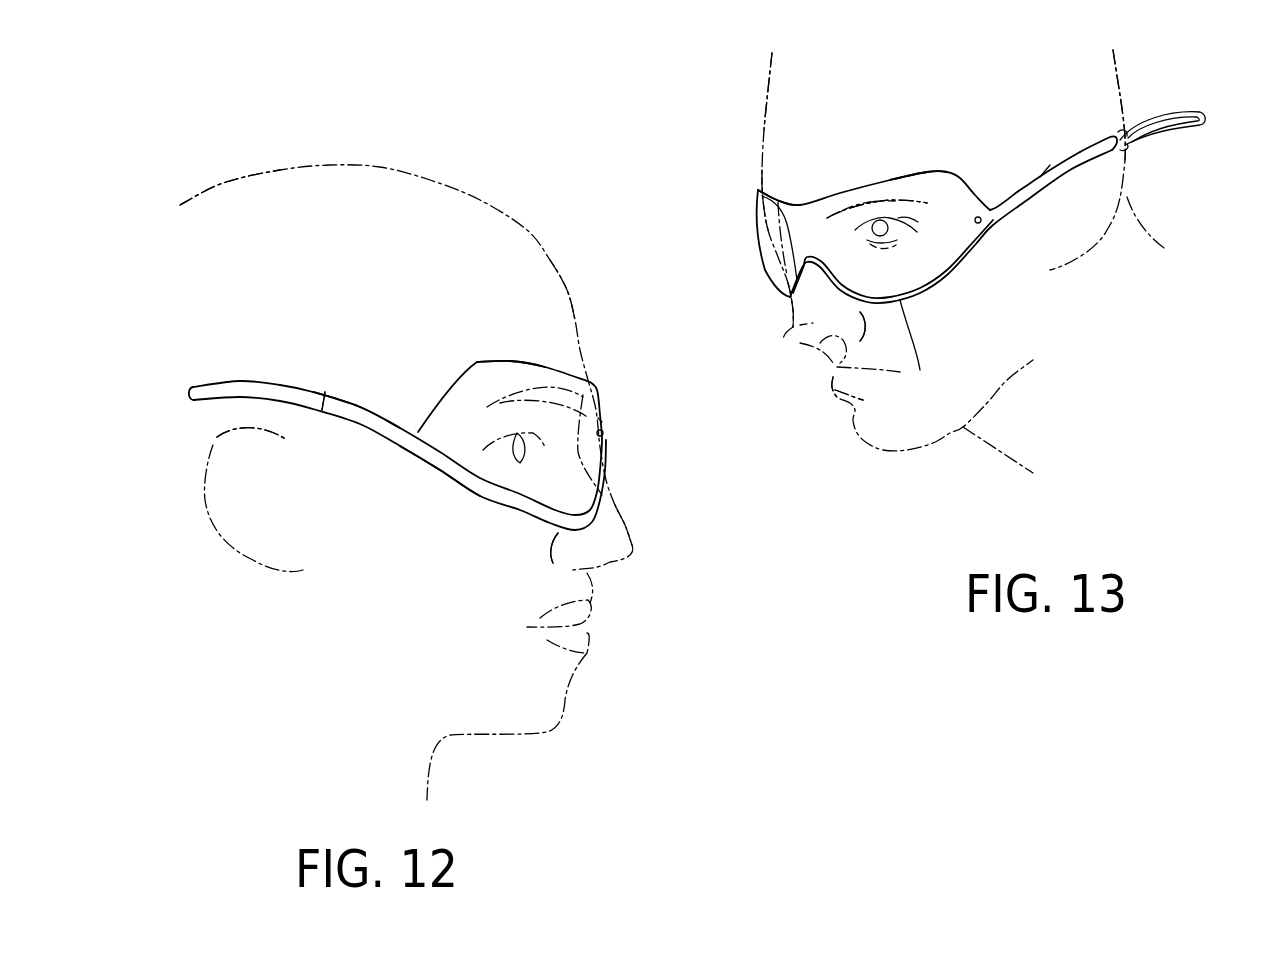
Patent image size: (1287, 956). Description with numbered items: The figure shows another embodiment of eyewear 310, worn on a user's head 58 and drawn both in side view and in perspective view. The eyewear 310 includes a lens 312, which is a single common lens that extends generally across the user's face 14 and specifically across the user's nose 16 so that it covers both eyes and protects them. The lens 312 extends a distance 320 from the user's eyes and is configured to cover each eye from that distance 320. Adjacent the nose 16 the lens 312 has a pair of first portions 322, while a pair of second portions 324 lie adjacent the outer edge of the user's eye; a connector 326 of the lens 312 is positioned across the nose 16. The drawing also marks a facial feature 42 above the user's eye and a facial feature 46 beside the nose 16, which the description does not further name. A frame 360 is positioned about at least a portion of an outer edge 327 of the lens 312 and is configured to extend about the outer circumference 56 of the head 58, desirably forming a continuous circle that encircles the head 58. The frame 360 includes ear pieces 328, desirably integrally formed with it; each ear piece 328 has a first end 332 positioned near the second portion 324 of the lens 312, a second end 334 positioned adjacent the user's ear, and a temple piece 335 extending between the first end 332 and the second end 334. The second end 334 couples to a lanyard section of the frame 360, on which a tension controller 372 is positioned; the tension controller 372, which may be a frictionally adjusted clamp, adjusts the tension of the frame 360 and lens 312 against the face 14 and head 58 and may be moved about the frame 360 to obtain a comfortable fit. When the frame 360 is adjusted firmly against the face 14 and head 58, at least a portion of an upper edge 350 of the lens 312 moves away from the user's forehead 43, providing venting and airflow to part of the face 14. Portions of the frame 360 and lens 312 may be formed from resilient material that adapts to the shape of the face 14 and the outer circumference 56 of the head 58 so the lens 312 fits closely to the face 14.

In FIG. 13, the face 14 is at (778, 383).
In FIG. 12, the nose 16 is at (632, 553).
In FIG. 13, the nose 16 is at (790, 333).
In FIG. 12, the eyebrow 42 is at (550, 393).
In FIG. 13, the eyebrow 42 is at (877, 203).
In FIG. 12, the forehead 43 is at (567, 335).
In FIG. 13, the forehead 43 is at (801, 188).
In FIG. 12, the nose 46 is at (523, 552).
In FIG. 13, the nose 46 is at (943, 324).
In FIG. 12, the outer circumference 56 is at (218, 288).
In FIG. 13, the outer circumference 56 is at (1097, 67).
In FIG. 12, the head 58 is at (238, 195).
In FIG. 13, the head 58 is at (778, 90).
In FIG. 12, the eyewear 310 is at (620, 372).
In FIG. 13, the eyewear 310 is at (734, 202).
In FIG. 12, the lens 312 is at (465, 385).
In FIG. 13, the lens 312 is at (945, 187).
In FIG. 12, the distance 320 is at (603, 432).
In FIG. 13, the first portions 322 is at (840, 233).
In FIG. 12, the second portions 324 is at (433, 455).
In FIG. 13, the second portions 324 is at (960, 265).
In FIG. 13, the connector 326 is at (783, 203).
In FIG. 12, the outer edge 327 is at (503, 360).
In FIG. 13, the outer edge 327 is at (913, 187).
In FIG. 13, the ear pieces 328 is at (1022, 183).
In FIG. 12, the first end 332 is at (388, 420).
In FIG. 13, the first end 332 is at (985, 224).
In FIG. 12, the second end 334 is at (222, 388).
In FIG. 13, the second end 334 is at (1100, 147).
In FIG. 12, the temple piece 335 is at (337, 415).
In FIG. 13, the temple piece 335 is at (1037, 180).
In FIG. 13, the upper edge 350 is at (843, 205).
In FIG. 12, the frame 360 is at (473, 485).
In FIG. 13, the frame 360 is at (855, 402).
In FIG. 13, the tension controller 372 is at (1133, 130).